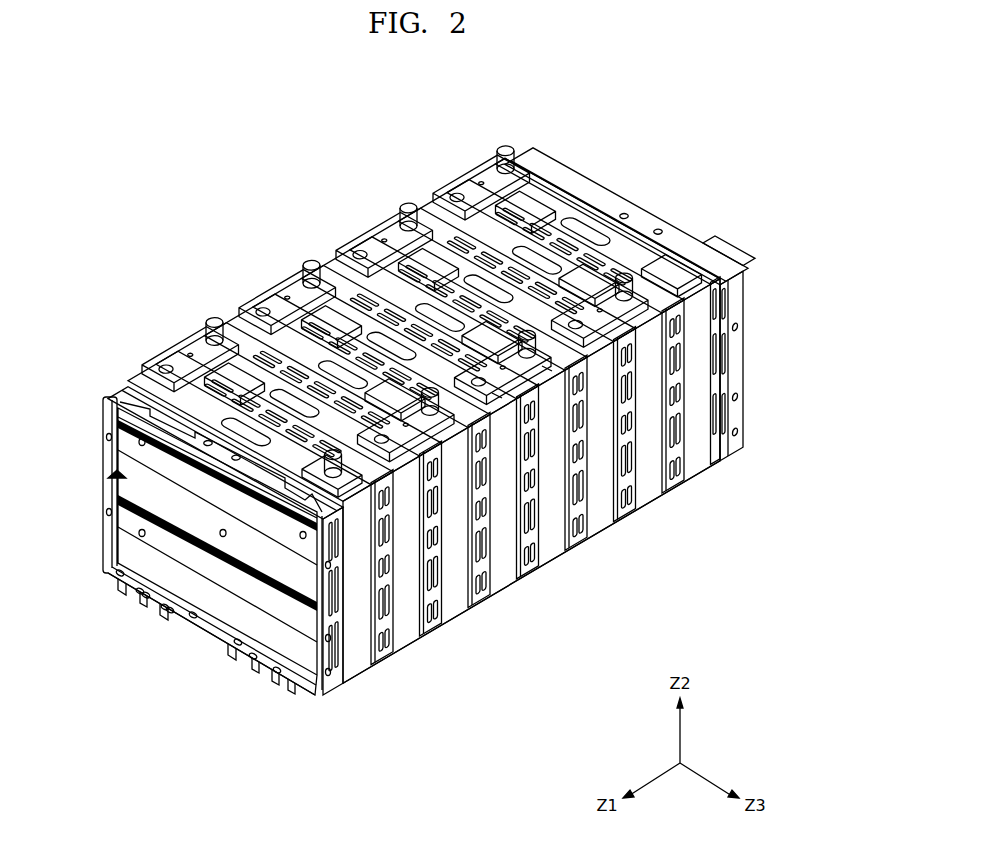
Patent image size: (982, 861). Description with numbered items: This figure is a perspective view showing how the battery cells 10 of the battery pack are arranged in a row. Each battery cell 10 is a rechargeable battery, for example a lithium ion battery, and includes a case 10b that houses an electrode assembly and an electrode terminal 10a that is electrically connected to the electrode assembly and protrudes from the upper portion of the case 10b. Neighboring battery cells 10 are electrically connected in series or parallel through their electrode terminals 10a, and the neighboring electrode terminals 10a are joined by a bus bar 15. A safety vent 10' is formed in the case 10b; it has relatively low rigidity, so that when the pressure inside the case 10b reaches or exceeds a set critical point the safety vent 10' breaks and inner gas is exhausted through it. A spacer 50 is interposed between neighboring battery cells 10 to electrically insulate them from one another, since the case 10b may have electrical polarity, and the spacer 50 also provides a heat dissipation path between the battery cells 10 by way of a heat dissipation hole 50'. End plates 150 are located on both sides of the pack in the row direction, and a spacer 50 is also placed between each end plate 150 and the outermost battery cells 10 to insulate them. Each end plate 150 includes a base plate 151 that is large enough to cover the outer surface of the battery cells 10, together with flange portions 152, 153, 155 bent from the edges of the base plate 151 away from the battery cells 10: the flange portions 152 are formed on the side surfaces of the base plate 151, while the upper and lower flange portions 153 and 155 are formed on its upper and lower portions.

The battery cell 10 is at (424, 436).
The safety vent 10' is at (426, 296).
The electrode terminal 10a is at (547, 368).
The case 10b is at (548, 555).
The bus bar 15 is at (481, 176).
The spacer 50 is at (446, 442).
The heat dissipation hole 50' is at (457, 554).
The end plate 150 is at (330, 712).
The base plate 151 is at (170, 577).
The flange portion 152 is at (105, 535).
The upper flange portion 153 is at (205, 637).
The lower flange portion 155 is at (650, 228).